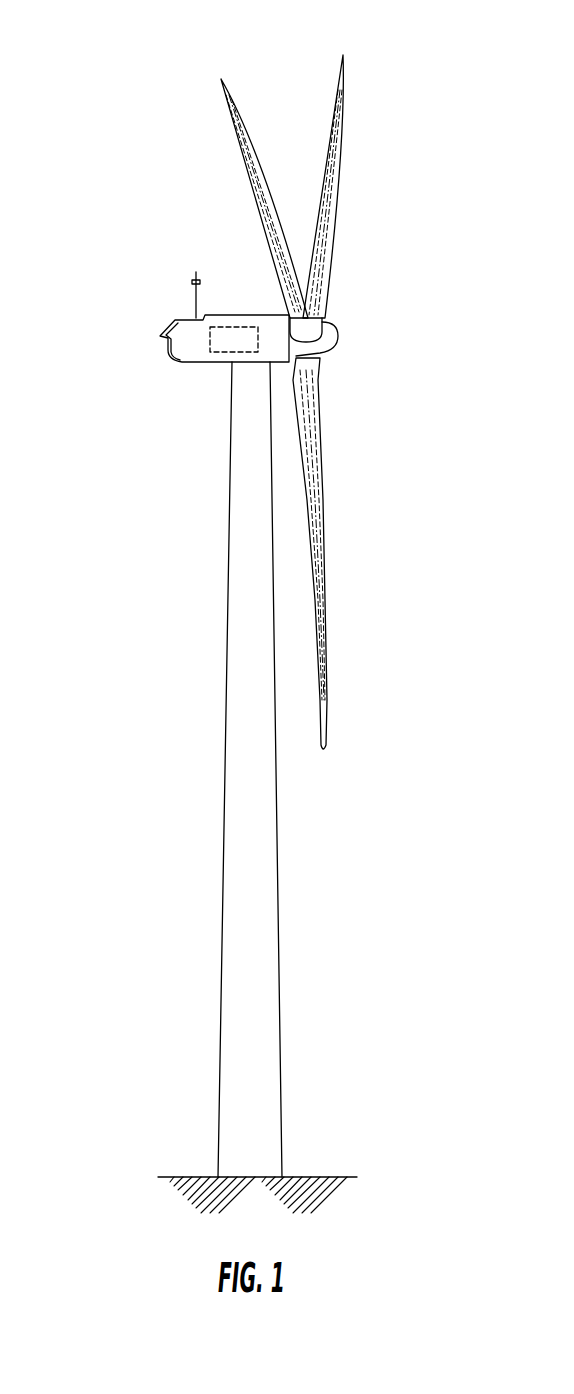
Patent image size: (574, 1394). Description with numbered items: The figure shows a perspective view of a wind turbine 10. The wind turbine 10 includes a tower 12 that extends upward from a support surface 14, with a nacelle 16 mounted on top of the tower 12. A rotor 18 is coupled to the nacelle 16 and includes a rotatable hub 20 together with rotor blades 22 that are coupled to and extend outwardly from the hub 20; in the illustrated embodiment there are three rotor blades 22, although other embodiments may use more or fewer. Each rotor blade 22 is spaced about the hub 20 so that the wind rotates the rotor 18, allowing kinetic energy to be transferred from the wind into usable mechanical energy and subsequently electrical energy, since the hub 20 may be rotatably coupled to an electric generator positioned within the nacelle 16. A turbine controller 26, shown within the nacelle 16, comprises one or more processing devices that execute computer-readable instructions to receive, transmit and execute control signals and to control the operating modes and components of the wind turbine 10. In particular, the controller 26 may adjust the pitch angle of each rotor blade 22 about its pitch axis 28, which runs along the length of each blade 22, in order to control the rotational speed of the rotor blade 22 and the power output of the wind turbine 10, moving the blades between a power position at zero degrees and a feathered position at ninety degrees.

The wind turbine 10 is at (106, 179).
The tower 12 is at (260, 838).
The support surface 14 is at (197, 1177).
The nacelle 16 is at (205, 363).
The rotor 18 is at (390, 269).
The rotatable hub 20 is at (339, 334).
The rotor blade 22 is at (337, 75).
The turbine controller 26 is at (237, 327).
The pitch axis 28 is at (262, 215).